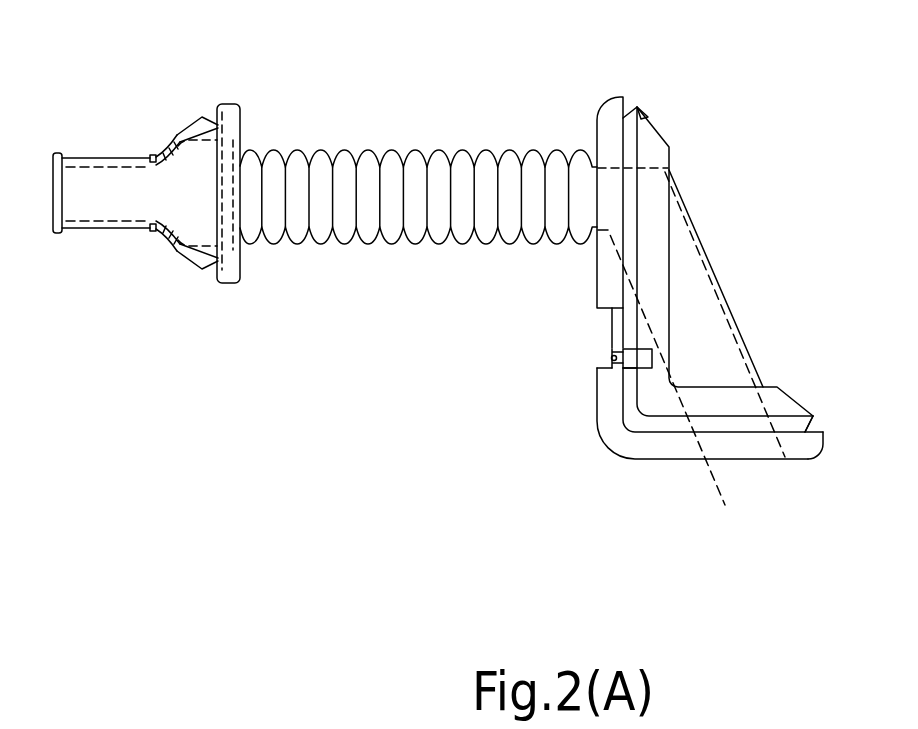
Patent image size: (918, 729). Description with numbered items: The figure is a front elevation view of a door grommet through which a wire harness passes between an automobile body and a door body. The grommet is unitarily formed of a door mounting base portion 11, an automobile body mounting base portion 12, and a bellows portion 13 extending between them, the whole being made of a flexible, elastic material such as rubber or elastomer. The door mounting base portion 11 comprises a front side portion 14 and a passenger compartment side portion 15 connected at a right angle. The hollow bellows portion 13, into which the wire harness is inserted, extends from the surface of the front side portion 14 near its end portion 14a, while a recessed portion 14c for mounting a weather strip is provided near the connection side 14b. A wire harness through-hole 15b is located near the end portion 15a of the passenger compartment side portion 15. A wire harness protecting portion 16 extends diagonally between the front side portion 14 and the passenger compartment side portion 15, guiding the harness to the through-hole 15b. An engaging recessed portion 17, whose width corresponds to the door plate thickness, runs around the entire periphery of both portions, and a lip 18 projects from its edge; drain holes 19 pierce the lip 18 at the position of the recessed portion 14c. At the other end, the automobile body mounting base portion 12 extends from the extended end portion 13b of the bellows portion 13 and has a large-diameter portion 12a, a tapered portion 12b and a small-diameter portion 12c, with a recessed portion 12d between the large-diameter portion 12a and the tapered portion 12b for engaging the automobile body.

The door mounting base portion 11 is at (740, 298).
The automobile body mounting base portion 12 is at (123, 148).
The large-diameter portion 12a is at (230, 283).
The tapered portion 12b is at (175, 252).
The small-diameter portion 12c is at (95, 230).
The recessed portion 12d is at (212, 272).
The bellows portion 13 is at (408, 247).
The extended end portion 13b is at (243, 245).
The front side portion 14 is at (605, 270).
The end portion 14a is at (600, 120).
The connection side 14b is at (596, 424).
The recessed portion 14c is at (613, 322).
The passenger compartment side portion 15 is at (647, 448).
The end portion 15a is at (810, 445).
The wire harness through-hole 15b is at (725, 505).
The wire harness protecting portion 16 is at (697, 268).
The engaging recessed portion 17 is at (648, 117).
The lip 18 is at (633, 107).
The drain holes 19 is at (617, 356).